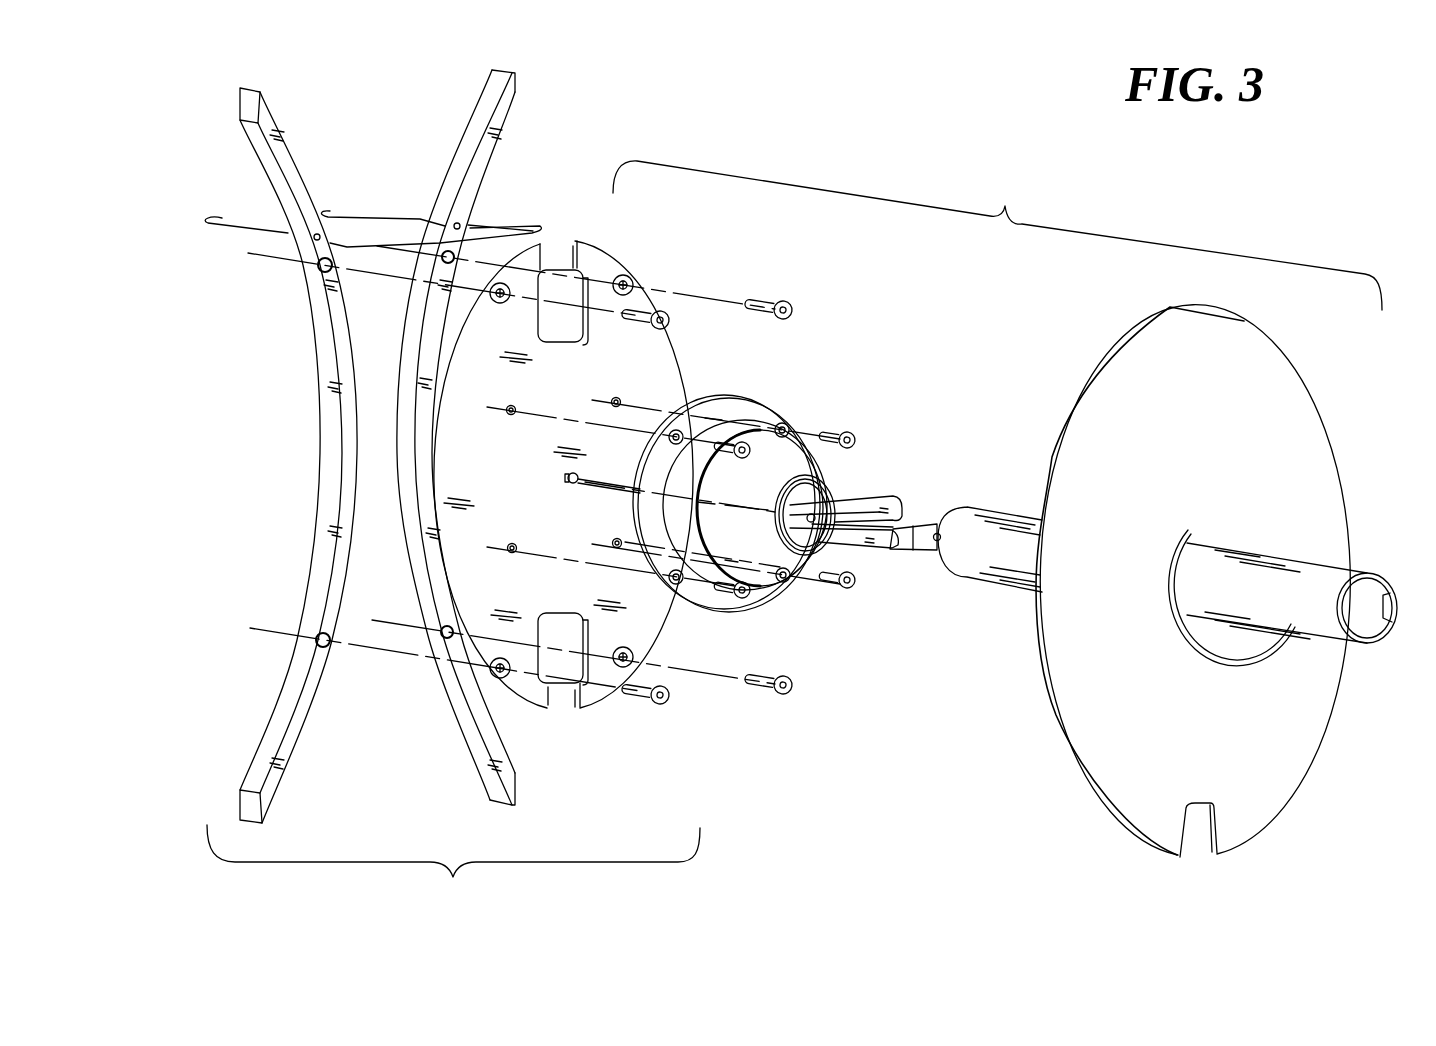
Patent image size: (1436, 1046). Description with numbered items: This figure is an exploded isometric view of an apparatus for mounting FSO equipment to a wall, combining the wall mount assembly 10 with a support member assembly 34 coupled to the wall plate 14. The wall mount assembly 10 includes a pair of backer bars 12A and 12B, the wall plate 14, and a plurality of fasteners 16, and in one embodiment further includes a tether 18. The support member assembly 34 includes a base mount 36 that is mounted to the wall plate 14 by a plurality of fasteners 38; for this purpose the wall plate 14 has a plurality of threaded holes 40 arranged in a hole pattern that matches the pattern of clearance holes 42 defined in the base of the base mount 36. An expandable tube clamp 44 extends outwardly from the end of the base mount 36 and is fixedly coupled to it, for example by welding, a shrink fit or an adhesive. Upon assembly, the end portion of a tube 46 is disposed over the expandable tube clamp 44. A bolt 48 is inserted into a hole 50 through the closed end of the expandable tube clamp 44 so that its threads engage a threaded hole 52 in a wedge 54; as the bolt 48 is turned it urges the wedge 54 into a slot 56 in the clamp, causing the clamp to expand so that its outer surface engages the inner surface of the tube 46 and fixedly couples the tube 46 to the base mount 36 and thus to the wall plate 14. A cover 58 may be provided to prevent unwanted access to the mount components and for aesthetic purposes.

The wall mount assembly 10 is at (848, 584).
The backer bar 12A is at (290, 158).
The backer bar 12B is at (497, 128).
The wall plate 14 is at (600, 262).
The fasteners 16 is at (768, 303).
The tether 18 is at (373, 213).
The support member assembly 34 is at (997, 235).
The base mount 36 is at (750, 410).
The fasteners 38 is at (845, 432).
The threaded holes 40 is at (505, 414).
The clearance holes 42 is at (688, 425).
The expandable tube clamp 44 is at (864, 496).
The tube 46 is at (980, 518).
The bolt 48 is at (576, 486).
The hole 50 is at (822, 508).
The threaded hole 52 is at (932, 524).
The wedge 54 is at (927, 553).
The slot 56 is at (928, 530).
The cover 58 is at (1288, 385).